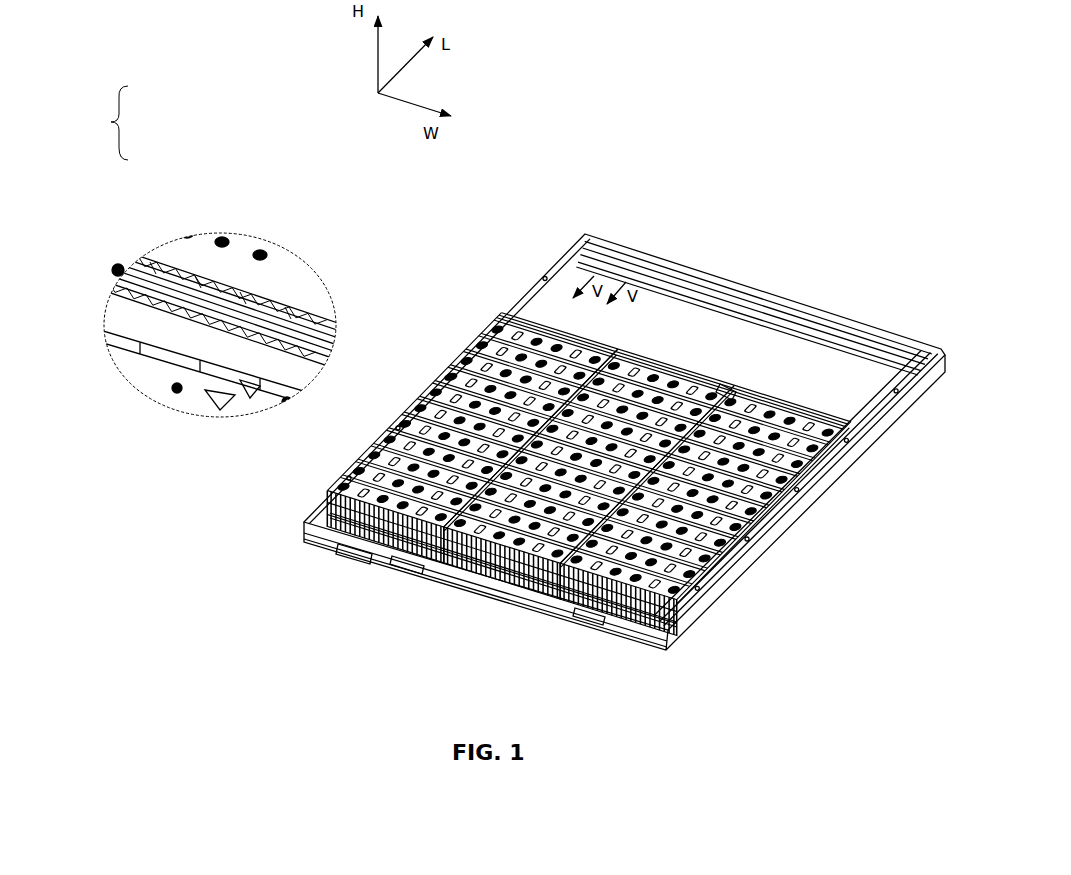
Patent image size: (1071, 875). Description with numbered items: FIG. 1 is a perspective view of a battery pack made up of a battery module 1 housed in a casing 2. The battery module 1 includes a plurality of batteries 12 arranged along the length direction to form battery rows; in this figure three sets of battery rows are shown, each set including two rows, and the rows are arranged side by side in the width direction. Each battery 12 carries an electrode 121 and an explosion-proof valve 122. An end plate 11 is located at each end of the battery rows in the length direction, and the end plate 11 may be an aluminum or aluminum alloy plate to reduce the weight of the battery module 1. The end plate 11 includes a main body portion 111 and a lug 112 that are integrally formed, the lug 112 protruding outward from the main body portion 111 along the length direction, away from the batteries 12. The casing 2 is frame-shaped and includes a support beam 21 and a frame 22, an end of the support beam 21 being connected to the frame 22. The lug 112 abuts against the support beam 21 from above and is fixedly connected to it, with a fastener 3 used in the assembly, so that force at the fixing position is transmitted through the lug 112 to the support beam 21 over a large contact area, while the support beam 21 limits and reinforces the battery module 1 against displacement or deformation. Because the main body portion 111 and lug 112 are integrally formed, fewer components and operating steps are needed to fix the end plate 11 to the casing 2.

The battery module 1 is at (111, 123).
The end plate 11 is at (682, 654).
The battery 12 is at (650, 358).
The main body portion 111 is at (210, 245).
The lug 112 is at (117, 323).
The electrode 121 is at (517, 303).
The explosion-proof valve 122 is at (541, 296).
The casing 2 is at (403, 386).
The support beam 21 is at (116, 340).
The frame 22 is at (301, 512).
The fastener 3 is at (108, 282).